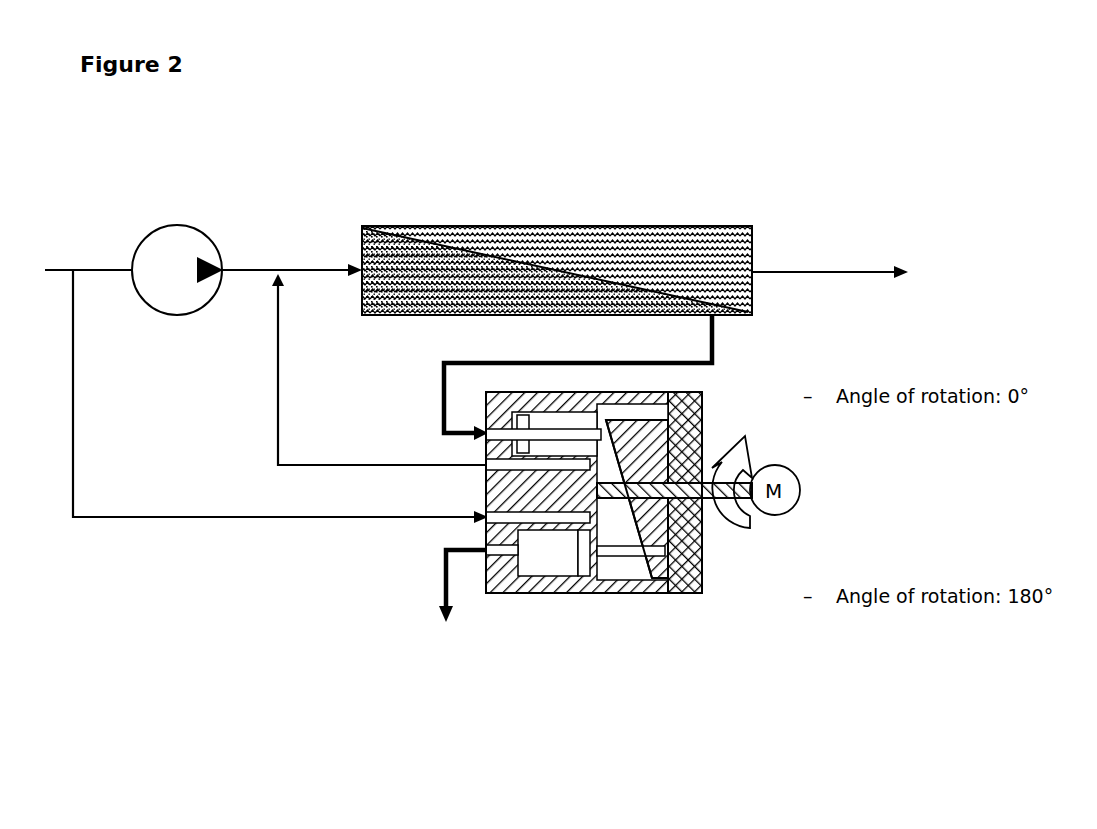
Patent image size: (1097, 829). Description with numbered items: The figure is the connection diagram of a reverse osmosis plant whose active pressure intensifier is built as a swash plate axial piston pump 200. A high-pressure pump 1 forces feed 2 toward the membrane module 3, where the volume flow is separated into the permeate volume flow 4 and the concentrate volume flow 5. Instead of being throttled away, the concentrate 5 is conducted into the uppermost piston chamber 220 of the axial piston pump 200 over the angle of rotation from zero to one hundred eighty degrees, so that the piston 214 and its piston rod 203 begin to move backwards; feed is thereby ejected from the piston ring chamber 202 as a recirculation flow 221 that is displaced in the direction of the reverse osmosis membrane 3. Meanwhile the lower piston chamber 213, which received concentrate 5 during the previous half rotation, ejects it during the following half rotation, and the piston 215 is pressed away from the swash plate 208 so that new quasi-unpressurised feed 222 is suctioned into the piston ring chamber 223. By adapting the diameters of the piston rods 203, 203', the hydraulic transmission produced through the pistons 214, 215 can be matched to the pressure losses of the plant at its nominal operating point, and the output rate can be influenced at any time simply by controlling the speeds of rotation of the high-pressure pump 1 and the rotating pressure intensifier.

The high-pressure pump 1 is at (167, 265).
The feed 2 is at (310, 268).
The membrane module 3 is at (588, 225).
The permeate volume flow 4 is at (836, 268).
The concentrate volume flow 5 is at (712, 332).
The axial piston pump 200 is at (718, 602).
The piston ring chamber 202 is at (558, 420).
The piston rod 203 is at (461, 518).
The piston rod 203' is at (660, 561).
The swash plate 208 is at (705, 397).
The lower piston chamber 213 is at (505, 593).
The piston 214 is at (486, 443).
The piston 215 is at (565, 593).
The piston chamber 220 is at (486, 415).
The recirculation flow 221 is at (275, 367).
The feed 222 is at (170, 522).
The piston ring chamber 223 is at (595, 593).